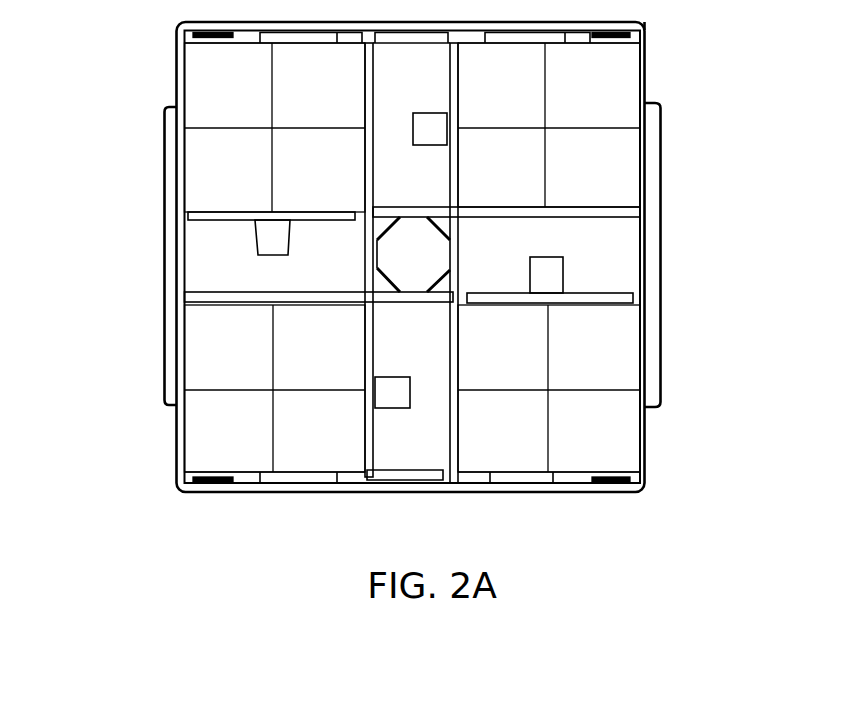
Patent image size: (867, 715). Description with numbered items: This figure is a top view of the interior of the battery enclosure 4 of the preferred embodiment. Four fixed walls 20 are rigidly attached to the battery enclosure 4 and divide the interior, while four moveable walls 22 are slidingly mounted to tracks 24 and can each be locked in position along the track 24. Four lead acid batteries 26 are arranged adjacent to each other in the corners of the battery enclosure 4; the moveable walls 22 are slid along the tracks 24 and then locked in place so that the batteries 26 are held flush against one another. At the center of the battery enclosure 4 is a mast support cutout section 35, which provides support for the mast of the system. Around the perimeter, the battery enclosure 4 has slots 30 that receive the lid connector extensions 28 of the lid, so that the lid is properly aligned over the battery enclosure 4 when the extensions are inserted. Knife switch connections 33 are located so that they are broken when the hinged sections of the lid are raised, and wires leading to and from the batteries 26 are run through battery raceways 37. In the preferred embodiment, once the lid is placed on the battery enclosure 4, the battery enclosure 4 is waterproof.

The battery enclosure 4 is at (173, 523).
The fixed walls 20 is at (362, 137).
The moveable walls 22 is at (197, 221).
The tracks 24 is at (565, 272).
The batteries 26 is at (202, 96).
The lid connector extensions 28 is at (683, 15).
The slots 30 is at (176, 25).
The knife switch connections 33 is at (413, 21).
The mast support cutout section 35 is at (463, 233).
The battery raceways 37 is at (292, 481).